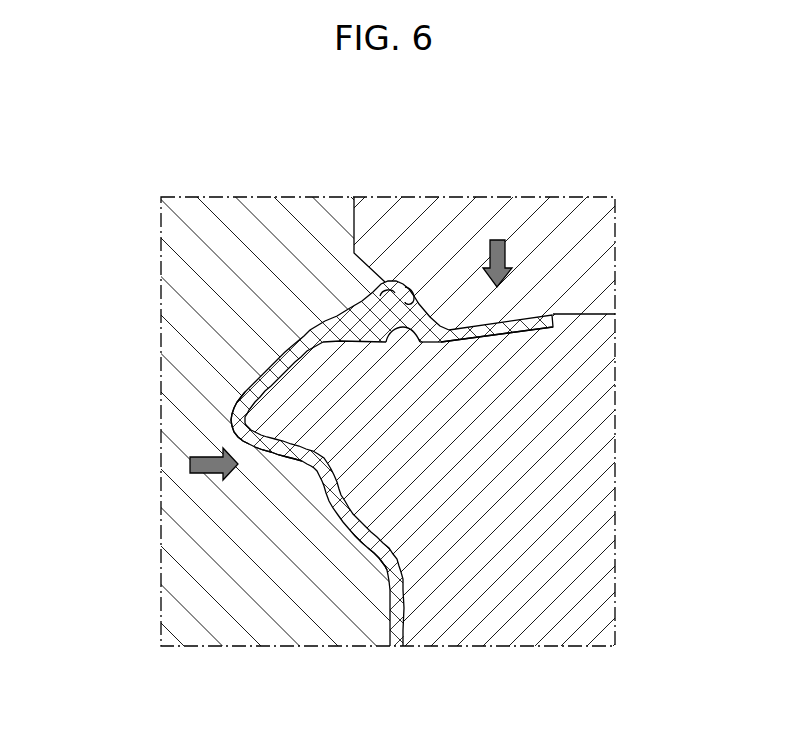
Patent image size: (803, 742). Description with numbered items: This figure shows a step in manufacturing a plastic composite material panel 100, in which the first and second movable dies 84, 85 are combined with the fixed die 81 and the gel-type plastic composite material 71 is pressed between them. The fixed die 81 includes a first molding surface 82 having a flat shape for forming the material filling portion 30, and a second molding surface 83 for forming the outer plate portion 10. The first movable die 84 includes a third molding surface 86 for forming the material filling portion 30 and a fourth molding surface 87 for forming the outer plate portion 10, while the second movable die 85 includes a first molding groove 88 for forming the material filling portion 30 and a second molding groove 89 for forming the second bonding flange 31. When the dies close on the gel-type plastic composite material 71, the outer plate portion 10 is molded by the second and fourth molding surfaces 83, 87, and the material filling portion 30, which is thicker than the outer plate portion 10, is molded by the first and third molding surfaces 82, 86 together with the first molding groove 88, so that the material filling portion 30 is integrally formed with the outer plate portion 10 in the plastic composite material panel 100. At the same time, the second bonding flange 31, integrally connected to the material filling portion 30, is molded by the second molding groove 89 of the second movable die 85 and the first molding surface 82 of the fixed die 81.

The plastic composite material panel 100 is at (401, 371).
The outer plate portion 10 is at (220, 402).
The material filling portion 30 is at (337, 296).
The second bonding flange 31 is at (526, 320).
The gel-type plastic composite material 71 is at (245, 428).
The fixed die 81 is at (510, 648).
The first molding surface 82 is at (420, 338).
The second molding surface 83 is at (385, 552).
The first movable die 84 is at (176, 590).
The second movable die 85 is at (617, 265).
The third molding surface 86 is at (393, 293).
The fourth molding surface 87 is at (287, 444).
The first molding groove 88 is at (405, 302).
The second molding groove 89 is at (503, 336).